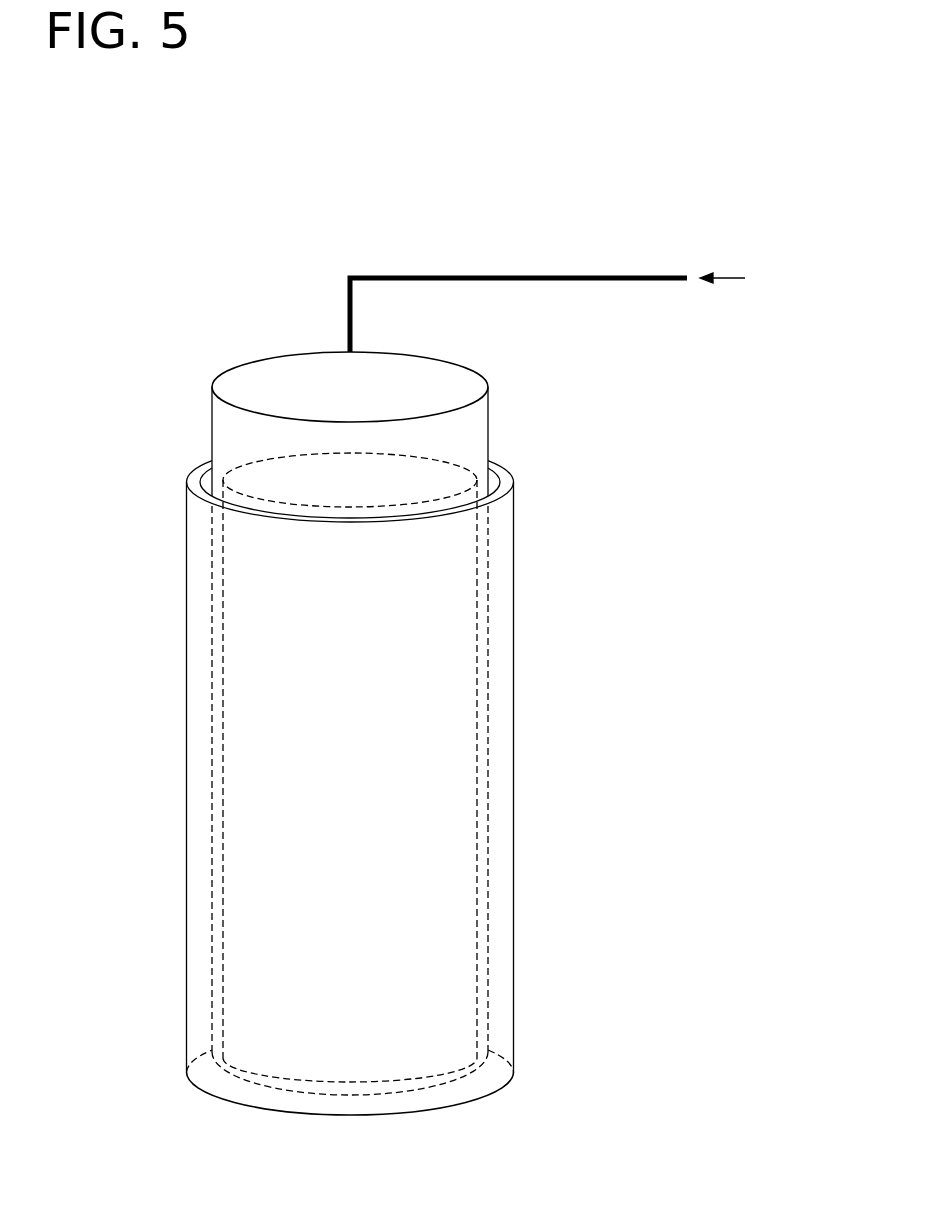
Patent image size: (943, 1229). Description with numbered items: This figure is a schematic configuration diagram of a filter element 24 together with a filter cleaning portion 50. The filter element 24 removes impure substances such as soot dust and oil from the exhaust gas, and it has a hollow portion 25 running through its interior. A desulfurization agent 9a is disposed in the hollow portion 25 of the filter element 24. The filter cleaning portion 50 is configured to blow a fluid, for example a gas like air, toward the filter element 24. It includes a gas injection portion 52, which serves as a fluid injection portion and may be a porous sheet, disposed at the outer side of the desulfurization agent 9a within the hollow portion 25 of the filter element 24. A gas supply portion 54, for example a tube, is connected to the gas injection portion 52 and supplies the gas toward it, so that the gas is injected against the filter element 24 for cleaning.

The filter cleaning portion 50 is at (259, 268).
The gas injection portion 52 is at (232, 365).
The gas supply portion 54 is at (565, 276).
The filter element 24 is at (514, 658).
The hollow portion 25 is at (484, 823).
The desulfurization agent 9a is at (435, 748).